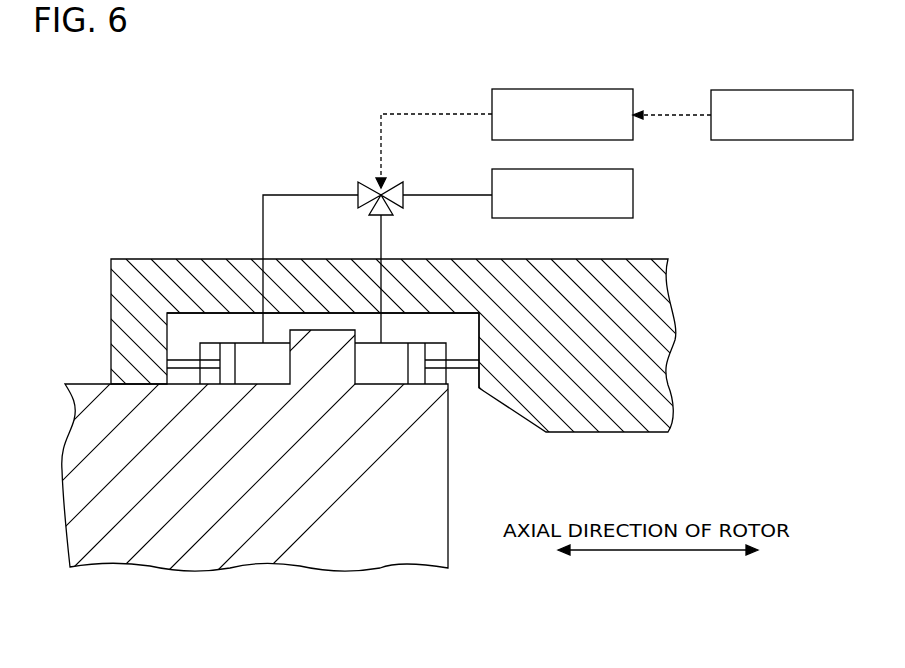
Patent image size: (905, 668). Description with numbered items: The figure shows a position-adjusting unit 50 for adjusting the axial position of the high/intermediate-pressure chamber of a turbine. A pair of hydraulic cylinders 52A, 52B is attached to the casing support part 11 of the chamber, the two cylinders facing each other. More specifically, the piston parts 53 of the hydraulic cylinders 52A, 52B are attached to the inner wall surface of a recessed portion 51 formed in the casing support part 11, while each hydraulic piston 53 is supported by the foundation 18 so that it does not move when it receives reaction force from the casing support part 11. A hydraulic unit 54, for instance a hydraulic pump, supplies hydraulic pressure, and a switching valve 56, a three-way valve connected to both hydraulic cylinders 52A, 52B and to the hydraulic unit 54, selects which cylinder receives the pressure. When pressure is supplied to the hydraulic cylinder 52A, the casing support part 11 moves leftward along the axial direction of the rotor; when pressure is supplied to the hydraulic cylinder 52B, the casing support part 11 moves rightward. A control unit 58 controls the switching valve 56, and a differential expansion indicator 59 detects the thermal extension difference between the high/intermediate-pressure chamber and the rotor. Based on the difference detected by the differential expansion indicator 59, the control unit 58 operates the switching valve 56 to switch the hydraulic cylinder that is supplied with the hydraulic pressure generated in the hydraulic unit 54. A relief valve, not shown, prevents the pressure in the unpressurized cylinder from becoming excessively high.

The casing support part 11 is at (133, 258).
The foundation 18 is at (263, 553).
The position-adjusting unit 50 is at (252, 166).
The recessed portion 51 is at (453, 332).
The hydraulic cylinder 52A is at (255, 342).
The hydraulic cylinder 52B is at (392, 344).
The piston part 53 is at (200, 372).
The hydraulic unit 54 is at (633, 192).
The switching valve 56 is at (358, 190).
The control unit 58 is at (598, 88).
The differential expansion indicator 59 is at (778, 90).